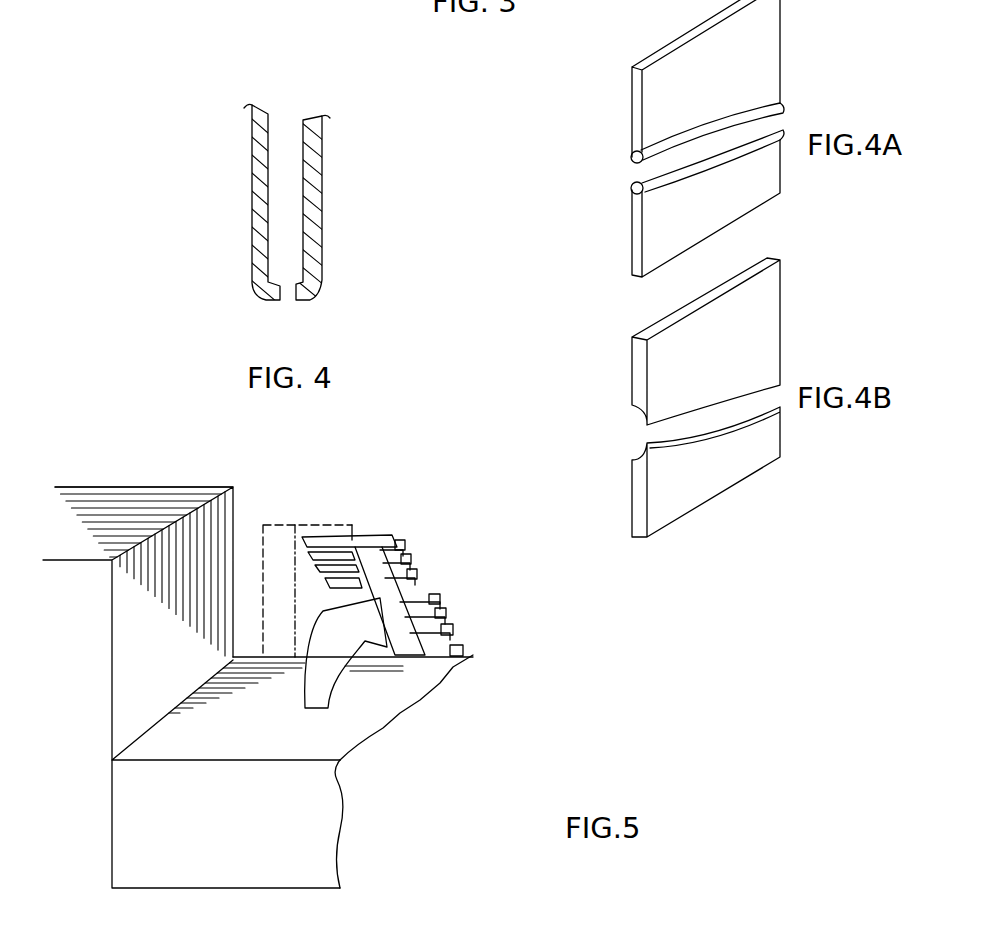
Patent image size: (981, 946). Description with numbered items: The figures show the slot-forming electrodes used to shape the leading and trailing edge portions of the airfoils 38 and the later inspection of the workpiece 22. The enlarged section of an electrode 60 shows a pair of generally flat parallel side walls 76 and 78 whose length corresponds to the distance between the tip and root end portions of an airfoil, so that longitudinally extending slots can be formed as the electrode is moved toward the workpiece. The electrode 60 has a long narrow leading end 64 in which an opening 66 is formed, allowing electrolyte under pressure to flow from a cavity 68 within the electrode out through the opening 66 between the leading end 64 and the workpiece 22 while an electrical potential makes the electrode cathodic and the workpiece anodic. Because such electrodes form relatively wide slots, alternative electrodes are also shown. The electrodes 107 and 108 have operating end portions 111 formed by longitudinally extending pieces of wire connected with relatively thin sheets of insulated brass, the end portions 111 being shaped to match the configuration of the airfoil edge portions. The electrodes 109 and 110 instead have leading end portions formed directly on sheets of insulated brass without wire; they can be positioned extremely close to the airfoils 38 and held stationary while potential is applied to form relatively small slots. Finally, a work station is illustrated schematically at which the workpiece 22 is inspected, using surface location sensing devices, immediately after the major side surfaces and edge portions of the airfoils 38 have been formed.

In FIG. 5, the workpiece 22 is at (368, 529).
In FIG. 5, the airfoils 38 is at (413, 551).
In FIG. 4, the electrode 60 is at (326, 183).
In FIG. 4, the leading end 64 is at (326, 296).
In FIG. 4, the opening 66 is at (287, 300).
In FIG. 4, the cavity 68 is at (283, 118).
In FIG. 4, the side wall 76 is at (315, 218).
In FIG. 4, the side wall 78 is at (252, 200).
In FIG. 4A, the electrode 107 is at (627, 111).
In FIG. 4A, the electrode 108 is at (627, 260).
In FIG. 4B, the electrode 109 is at (627, 389).
In FIG. 4B, the electrode 110 is at (627, 517).
In FIG. 5, the electrode 110 is at (193, 476).
In FIG. 4A, the operating end portion 111 is at (631, 158).